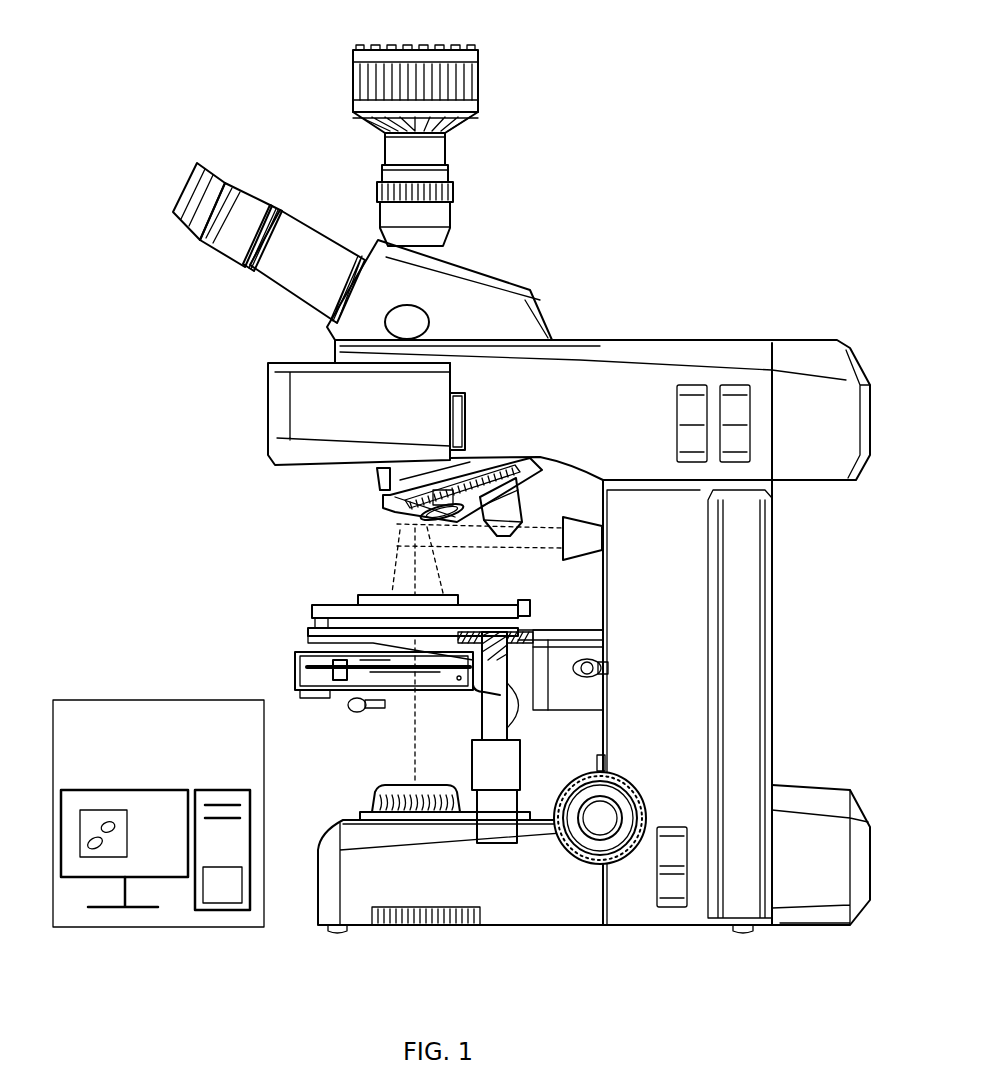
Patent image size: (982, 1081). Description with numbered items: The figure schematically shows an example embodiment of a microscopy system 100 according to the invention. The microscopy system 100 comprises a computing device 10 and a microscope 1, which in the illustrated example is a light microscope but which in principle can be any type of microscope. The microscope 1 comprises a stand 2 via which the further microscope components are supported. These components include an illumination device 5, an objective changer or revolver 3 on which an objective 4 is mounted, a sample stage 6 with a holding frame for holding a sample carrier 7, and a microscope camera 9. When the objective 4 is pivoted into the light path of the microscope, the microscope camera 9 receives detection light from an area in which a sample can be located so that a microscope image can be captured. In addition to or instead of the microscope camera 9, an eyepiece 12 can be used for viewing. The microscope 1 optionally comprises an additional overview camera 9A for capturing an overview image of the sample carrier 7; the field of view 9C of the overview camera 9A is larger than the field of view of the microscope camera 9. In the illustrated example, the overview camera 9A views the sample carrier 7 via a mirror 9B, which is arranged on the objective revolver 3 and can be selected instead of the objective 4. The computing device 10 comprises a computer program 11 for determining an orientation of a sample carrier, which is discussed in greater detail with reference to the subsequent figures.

The microscopy system 100 is at (461, 489).
The microscope 1 is at (485, 489).
The stand 2 is at (747, 757).
The objective changer/revolver 3 is at (377, 478).
The objective 4 is at (513, 500).
The illumination device 5 is at (375, 870).
The sample stage 6 is at (337, 627).
The sample carrier 7 is at (358, 603).
The microscope camera 9 is at (468, 75).
The overview camera 9A is at (598, 551).
The mirror 9B is at (395, 527).
The field of view 9C is at (395, 545).
The computing device 10 is at (158, 813).
The computer program 11 is at (235, 898).
The eyepiece 12 is at (197, 228).